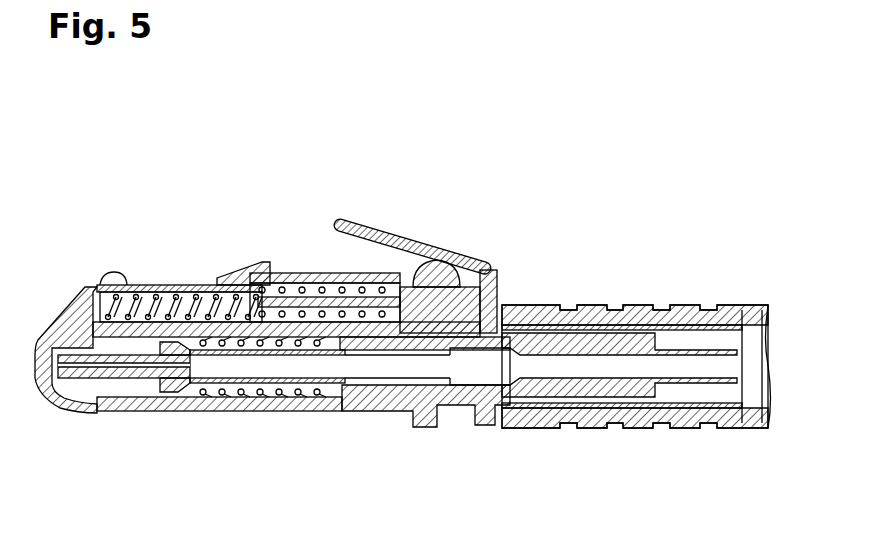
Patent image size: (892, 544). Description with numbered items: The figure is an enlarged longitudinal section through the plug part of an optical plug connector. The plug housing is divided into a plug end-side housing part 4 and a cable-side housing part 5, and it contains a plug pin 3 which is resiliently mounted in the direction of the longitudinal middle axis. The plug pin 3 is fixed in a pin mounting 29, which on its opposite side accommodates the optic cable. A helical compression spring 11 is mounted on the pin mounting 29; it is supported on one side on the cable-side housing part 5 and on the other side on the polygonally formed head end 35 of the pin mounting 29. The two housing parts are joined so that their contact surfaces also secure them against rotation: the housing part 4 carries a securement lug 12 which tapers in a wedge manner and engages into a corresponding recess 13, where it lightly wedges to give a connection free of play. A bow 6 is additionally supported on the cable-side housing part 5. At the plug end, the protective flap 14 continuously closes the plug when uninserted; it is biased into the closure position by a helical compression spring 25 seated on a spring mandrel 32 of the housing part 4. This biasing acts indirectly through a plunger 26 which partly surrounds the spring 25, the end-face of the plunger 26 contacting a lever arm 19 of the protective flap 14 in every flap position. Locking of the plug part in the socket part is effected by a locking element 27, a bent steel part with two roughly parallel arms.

The plug pin 3 is at (62, 408).
The plug end-side housing part 4 is at (297, 430).
The cable-side housing part 5 is at (457, 407).
The bow 6 is at (134, 412).
The helical compression spring 11 is at (256, 412).
The securement lug 12 is at (464, 290).
The recess 13 is at (500, 292).
The protective flap 14 is at (47, 400).
The lever arm 19 is at (93, 288).
The helical compression spring 25 is at (303, 297).
The plunger 26 is at (191, 287).
The locking element 27 is at (364, 300).
The pin mounting 29 is at (382, 368).
The spring mandrel 32 is at (414, 266).
The head end 35 is at (181, 412).